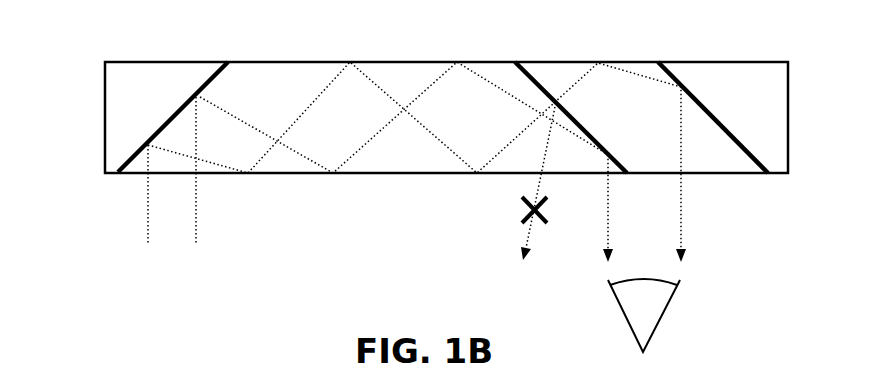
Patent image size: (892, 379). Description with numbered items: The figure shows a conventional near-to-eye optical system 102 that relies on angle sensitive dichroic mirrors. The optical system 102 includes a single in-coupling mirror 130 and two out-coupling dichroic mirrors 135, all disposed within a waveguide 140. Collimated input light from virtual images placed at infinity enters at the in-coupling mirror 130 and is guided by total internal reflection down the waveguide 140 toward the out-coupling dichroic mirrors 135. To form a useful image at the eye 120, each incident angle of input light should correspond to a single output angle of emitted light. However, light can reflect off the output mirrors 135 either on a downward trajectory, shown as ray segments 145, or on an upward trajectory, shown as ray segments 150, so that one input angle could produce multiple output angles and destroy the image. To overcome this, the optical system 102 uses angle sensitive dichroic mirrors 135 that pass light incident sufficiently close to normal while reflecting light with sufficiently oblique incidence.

The near-to-eye optical system 102 is at (246, 271).
The eye 120 is at (660, 318).
The in-coupling mirror 130 is at (173, 117).
The out-coupling dichroic mirror 135 is at (543, 88).
The waveguide 140 is at (275, 62).
The ray segments on downward trajectory 145 is at (478, 72).
The ray segments on upward trajectory 150 is at (517, 140).